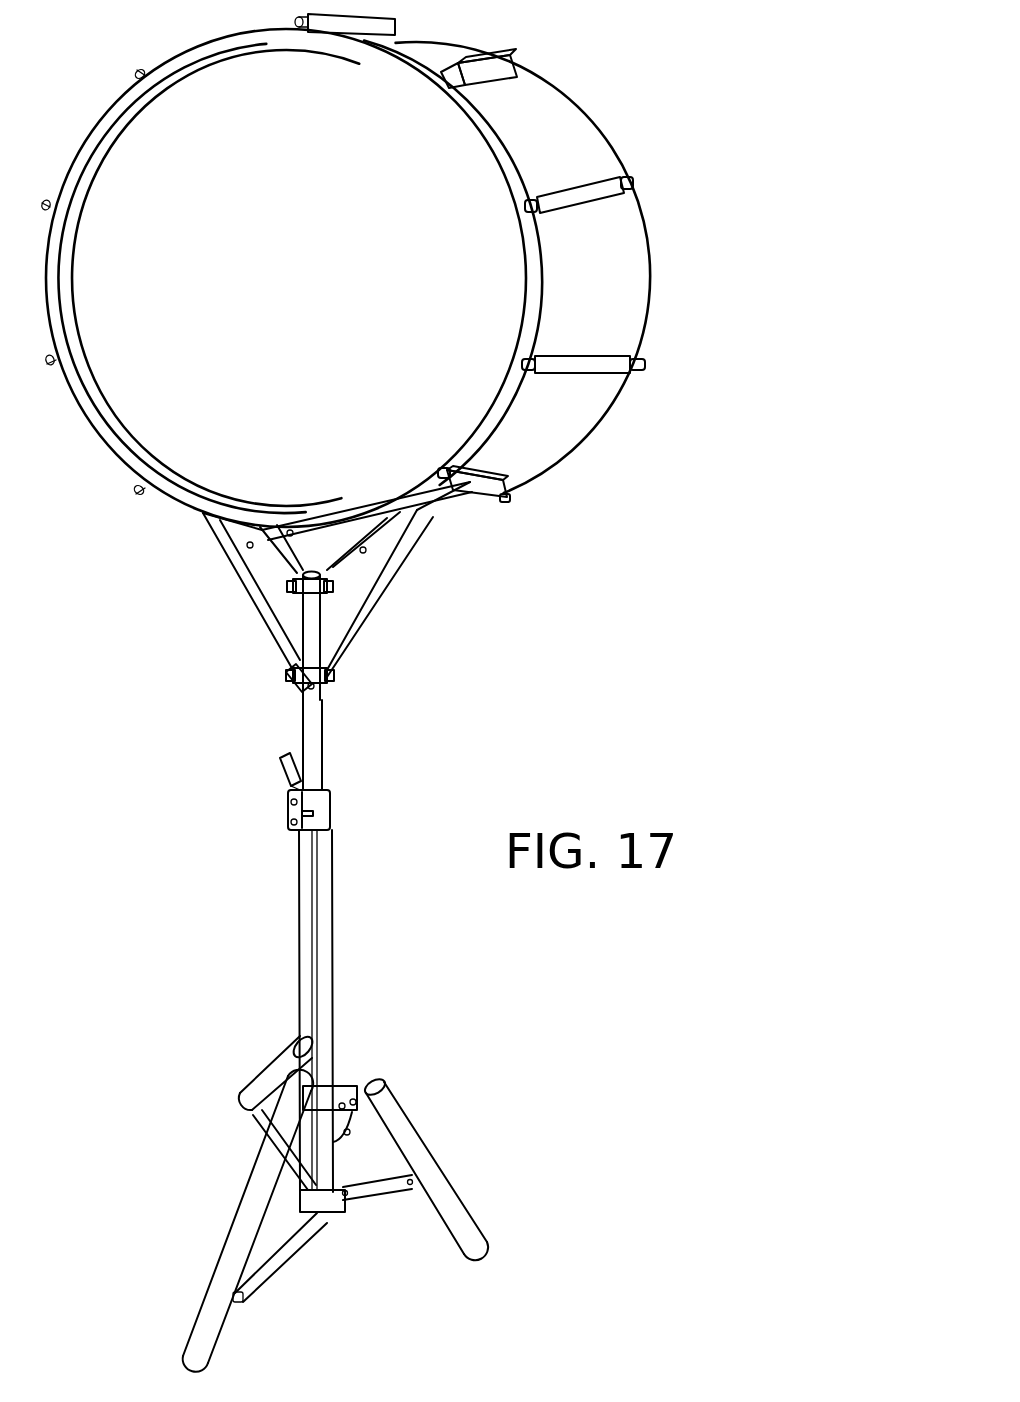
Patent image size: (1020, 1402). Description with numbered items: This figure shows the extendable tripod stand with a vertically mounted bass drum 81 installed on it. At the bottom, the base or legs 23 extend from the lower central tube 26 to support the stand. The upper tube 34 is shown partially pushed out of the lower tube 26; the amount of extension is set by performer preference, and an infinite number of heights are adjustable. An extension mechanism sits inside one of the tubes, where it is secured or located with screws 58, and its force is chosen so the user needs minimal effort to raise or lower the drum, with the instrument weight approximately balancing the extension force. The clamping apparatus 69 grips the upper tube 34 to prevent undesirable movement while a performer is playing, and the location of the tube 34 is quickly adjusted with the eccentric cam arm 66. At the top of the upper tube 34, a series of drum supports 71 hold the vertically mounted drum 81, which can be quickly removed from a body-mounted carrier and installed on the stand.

The bass drum 81 is at (648, 326).
The drum supports 71 is at (360, 607).
The upper tube 34 is at (320, 731).
The eccentric cam arm 66 is at (279, 763).
The clamping apparatus 69 is at (255, 828).
The lower central tube 26 is at (302, 953).
The screws 58 is at (323, 1004).
The legs 23 is at (413, 1108).